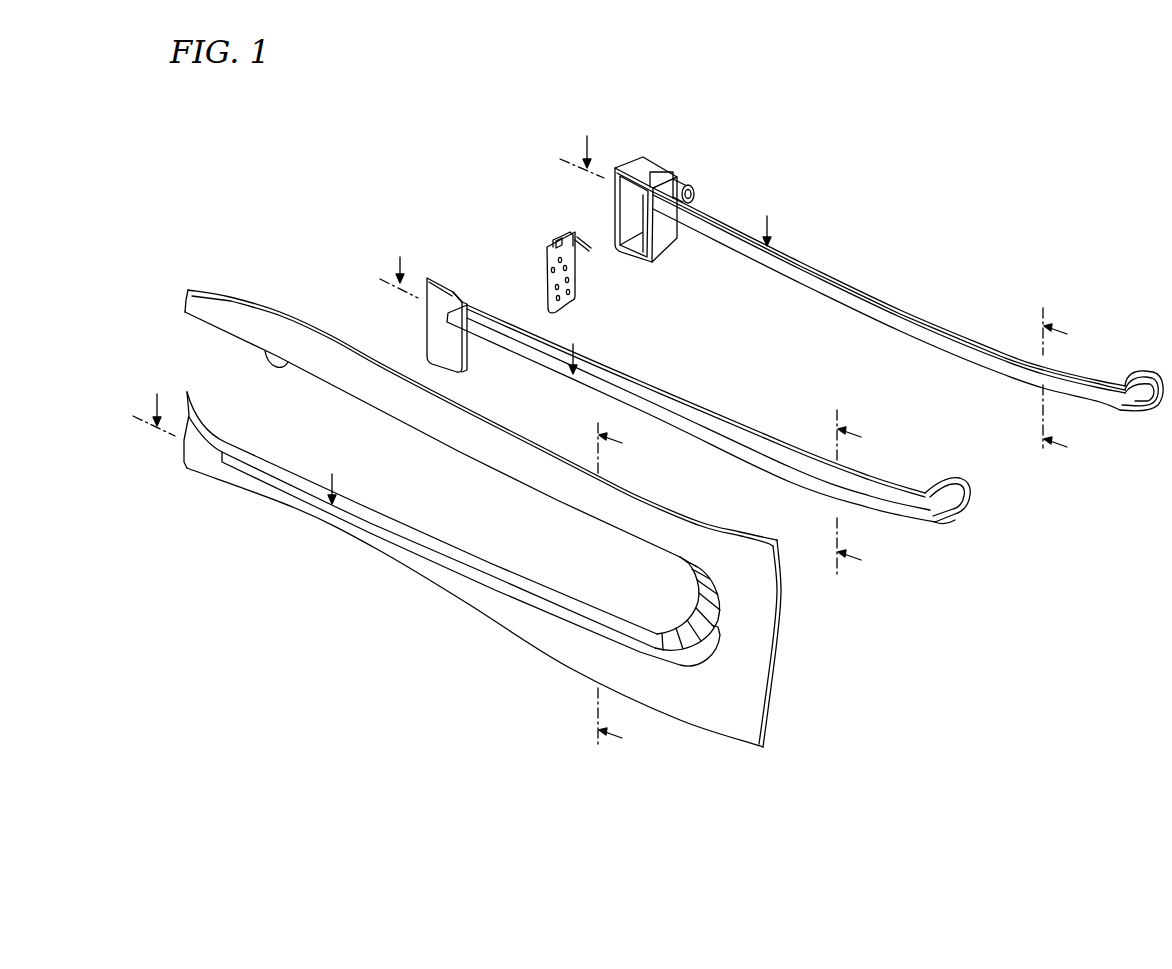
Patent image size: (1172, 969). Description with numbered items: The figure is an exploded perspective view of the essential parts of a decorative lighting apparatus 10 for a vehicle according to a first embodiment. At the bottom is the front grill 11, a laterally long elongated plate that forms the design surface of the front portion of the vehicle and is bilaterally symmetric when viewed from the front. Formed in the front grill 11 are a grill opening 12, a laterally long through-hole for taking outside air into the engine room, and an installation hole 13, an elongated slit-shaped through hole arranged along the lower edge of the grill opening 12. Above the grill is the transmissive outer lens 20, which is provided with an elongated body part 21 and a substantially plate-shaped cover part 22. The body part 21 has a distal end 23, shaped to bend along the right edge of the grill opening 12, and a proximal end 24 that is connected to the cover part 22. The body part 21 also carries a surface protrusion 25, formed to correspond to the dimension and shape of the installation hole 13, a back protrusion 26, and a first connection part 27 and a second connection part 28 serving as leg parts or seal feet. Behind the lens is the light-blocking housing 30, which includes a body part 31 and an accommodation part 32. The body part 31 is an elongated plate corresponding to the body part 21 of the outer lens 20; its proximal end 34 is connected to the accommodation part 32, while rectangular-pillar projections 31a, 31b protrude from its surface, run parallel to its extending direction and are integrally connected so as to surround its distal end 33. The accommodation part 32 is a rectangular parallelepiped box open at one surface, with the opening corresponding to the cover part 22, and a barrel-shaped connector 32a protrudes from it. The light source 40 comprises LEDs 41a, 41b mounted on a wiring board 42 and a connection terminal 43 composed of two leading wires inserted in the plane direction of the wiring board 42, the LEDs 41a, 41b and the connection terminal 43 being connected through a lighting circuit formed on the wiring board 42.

The decorative lighting apparatus 10 is at (1134, 157).
The front grill 11 is at (501, 569).
The grill opening 12 is at (286, 364).
The installation hole 13 is at (494, 591).
The outer lens 20 is at (703, 405).
The body part 21 is at (713, 429).
The cover part 22 is at (470, 358).
The distal end 23 is at (960, 472).
The proximal end 24 is at (468, 298).
The surface protrusion 25 is at (763, 473).
The back protrusion 26 is at (767, 434).
The first connection part 27 is at (684, 405).
The second connection part 28 is at (947, 519).
The housing 30 is at (889, 265).
The body part 31 is at (908, 299).
The projection 31a is at (835, 283).
The projection 31b is at (847, 307).
The accommodation part 32 is at (668, 205).
The connector 32a is at (690, 185).
The distal end 33 is at (1150, 363).
The proximal end 34 is at (656, 178).
The light source 40 is at (534, 242).
The LED 41a is at (556, 248).
The LED 41b is at (560, 241).
The wiring board 42 is at (548, 268).
The connection terminal 43 is at (583, 224).